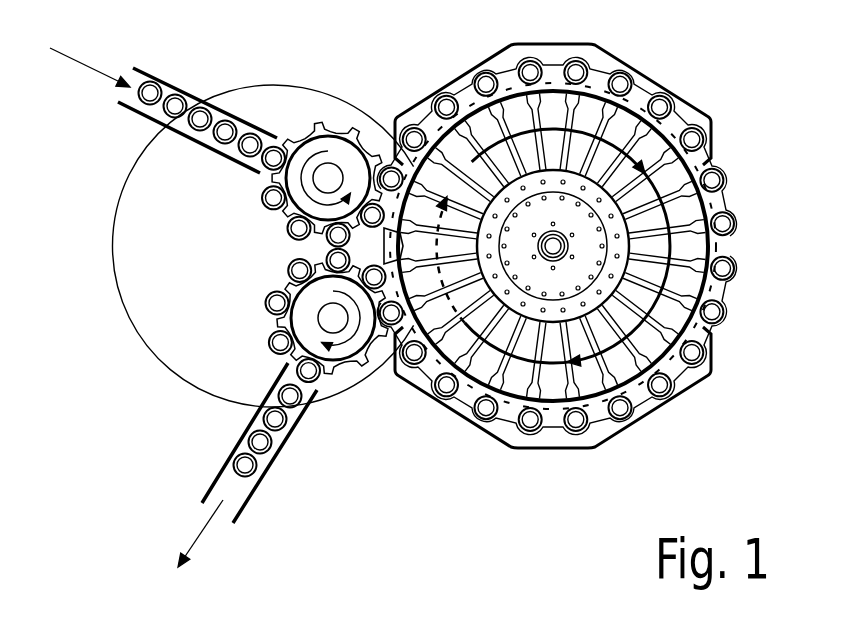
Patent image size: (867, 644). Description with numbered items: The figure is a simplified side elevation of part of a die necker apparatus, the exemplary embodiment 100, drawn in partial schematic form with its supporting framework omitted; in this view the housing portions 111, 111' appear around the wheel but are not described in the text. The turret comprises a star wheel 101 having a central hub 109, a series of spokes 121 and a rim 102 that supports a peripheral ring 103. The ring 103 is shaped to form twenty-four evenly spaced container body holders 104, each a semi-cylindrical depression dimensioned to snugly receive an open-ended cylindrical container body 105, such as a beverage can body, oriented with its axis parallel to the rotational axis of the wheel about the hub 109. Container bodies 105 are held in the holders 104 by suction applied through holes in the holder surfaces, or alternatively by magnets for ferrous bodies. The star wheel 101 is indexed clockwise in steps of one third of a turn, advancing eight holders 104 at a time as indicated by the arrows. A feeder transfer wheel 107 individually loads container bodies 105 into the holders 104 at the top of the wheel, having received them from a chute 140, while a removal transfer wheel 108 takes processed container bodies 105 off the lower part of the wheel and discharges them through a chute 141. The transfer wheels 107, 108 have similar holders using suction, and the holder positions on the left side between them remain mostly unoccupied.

The exemplary embodiment 100 is at (283, 60).
The star wheel 101 is at (745, 330).
The rim 102 is at (722, 296).
The peripheral ring 103 is at (722, 247).
The container body holders 104 is at (384, 345).
The container body 105 is at (177, 113).
The feeder transfer wheel 107 is at (307, 148).
The removal transfer wheel 108 is at (272, 316).
The central hub 109 is at (560, 218).
The upper housing section 111 is at (583, 88).
The lower housing section 111' is at (593, 387).
The spokes 121 is at (700, 162).
The chute 140 is at (145, 73).
The chute 141 is at (258, 490).